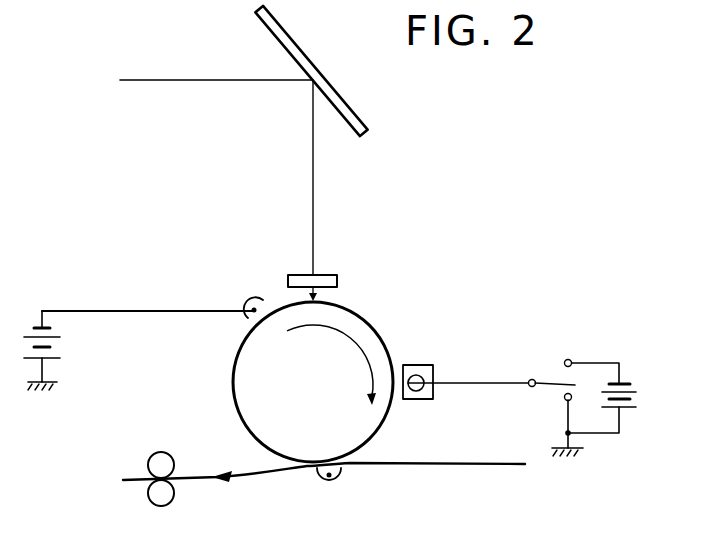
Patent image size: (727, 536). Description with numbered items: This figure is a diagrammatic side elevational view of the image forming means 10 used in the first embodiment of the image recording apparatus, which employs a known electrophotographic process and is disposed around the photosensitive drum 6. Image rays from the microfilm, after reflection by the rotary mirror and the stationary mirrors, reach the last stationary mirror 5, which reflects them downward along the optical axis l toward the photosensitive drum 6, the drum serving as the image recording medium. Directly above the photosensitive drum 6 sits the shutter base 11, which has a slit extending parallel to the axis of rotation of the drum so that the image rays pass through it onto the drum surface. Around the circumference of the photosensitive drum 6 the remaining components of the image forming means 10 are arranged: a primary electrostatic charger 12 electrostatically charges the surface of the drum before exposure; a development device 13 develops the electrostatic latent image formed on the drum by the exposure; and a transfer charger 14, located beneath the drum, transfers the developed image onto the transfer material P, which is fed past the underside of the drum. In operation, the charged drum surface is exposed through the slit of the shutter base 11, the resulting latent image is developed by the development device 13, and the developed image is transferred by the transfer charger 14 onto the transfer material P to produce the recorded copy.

The stationary mirror 5 is at (283, 27).
The optical axis l is at (205, 82).
The photosensitive drum 6 is at (232, 387).
The image forming means 10 is at (336, 358).
The shutter base 11 is at (338, 281).
The primary electrostatic charger 12 is at (252, 297).
The development device 13 is at (420, 365).
The transfer charger 14 is at (334, 485).
The transfer material P is at (437, 466).